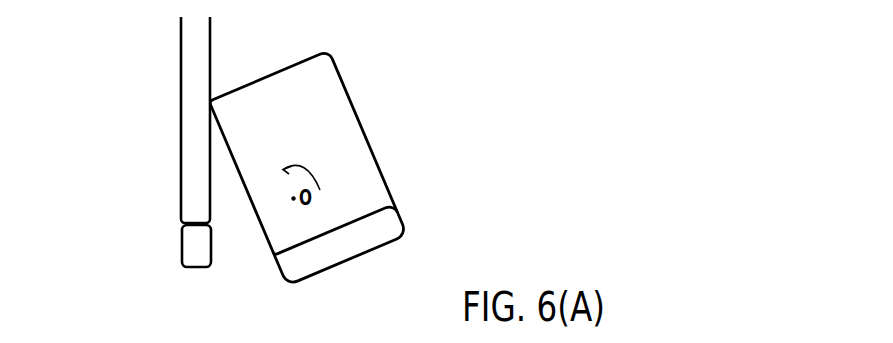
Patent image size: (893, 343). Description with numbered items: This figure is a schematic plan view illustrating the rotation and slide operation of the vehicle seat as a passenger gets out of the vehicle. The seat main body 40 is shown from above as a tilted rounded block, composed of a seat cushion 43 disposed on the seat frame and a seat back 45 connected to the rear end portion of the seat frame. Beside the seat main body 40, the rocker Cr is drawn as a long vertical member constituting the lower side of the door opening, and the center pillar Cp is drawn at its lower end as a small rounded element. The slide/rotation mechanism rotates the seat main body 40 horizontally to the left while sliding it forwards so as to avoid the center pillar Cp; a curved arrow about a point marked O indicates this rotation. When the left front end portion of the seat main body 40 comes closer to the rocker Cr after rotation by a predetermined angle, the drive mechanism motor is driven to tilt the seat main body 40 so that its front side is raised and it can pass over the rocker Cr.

The rocker Cr is at (193, 145).
The center pillar Cp is at (195, 243).
The seat main body 40 is at (332, 168).
The seat cushion 43 is at (327, 115).
The seat back 45 is at (367, 242).